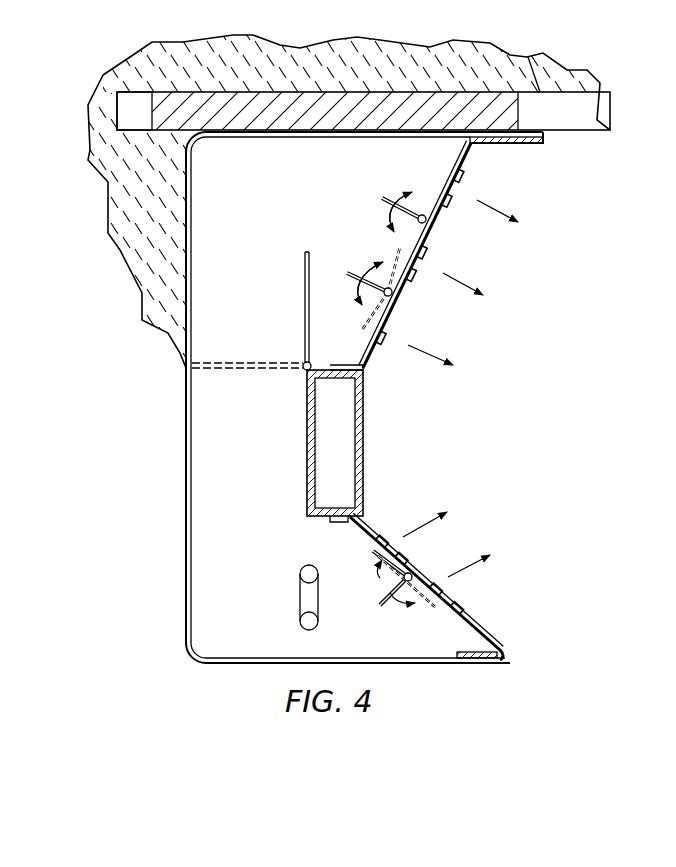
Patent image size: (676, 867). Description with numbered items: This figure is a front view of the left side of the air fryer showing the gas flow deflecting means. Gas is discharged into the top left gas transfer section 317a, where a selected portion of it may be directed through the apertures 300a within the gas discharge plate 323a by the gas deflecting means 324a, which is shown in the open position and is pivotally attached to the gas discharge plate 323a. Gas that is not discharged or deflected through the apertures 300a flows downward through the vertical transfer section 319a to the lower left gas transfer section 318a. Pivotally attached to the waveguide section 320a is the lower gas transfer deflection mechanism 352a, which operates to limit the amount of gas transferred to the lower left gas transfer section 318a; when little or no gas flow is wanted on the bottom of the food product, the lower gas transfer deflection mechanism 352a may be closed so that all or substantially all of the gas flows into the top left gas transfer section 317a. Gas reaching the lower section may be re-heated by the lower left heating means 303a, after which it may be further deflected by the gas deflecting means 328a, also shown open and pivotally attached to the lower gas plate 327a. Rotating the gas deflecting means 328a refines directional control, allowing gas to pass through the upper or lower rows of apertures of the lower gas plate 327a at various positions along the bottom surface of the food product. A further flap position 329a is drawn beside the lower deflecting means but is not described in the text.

The top left gas transfer section 317a is at (287, 188).
The lower left gas transfer section 318a is at (274, 536).
The vertical transfer section 319a is at (234, 286).
The apertures 300a is at (460, 190).
The gas discharge plate 323a is at (432, 225).
The gas deflecting means 324a is at (366, 272).
The lower gas transfer deflection mechanism 352a is at (307, 317).
The waveguide section 320a is at (350, 442).
The lower gas plate 327a is at (468, 616).
The gas deflecting means 328a is at (385, 600).
The lower flap closed position 329a is at (426, 604).
The lower left heating means 303a is at (300, 598).